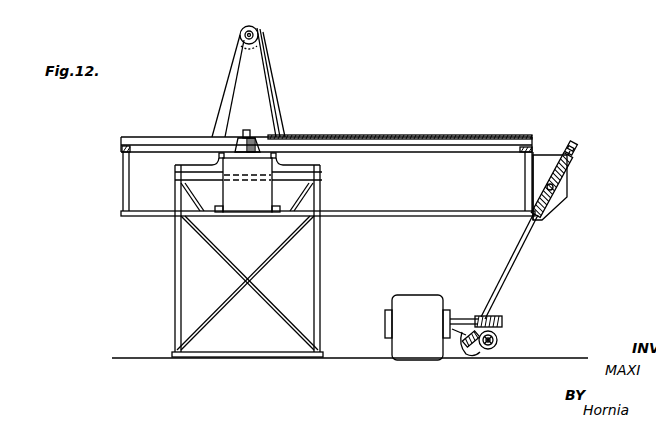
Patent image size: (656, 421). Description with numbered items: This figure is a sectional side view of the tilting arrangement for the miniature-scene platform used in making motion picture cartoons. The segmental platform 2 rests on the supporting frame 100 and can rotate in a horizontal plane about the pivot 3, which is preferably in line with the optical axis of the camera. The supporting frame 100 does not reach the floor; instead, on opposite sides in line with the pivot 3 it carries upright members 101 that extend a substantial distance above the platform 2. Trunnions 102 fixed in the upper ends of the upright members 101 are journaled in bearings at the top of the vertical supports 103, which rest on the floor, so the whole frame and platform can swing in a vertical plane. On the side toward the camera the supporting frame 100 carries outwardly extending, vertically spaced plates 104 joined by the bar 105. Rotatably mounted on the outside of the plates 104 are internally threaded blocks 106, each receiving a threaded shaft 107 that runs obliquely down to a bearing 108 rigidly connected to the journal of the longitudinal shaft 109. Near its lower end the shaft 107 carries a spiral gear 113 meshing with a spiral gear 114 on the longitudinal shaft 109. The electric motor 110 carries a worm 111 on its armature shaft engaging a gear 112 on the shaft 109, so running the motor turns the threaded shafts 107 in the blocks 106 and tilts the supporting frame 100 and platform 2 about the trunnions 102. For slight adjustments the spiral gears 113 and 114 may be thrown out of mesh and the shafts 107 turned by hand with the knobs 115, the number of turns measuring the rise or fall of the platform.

The platform 2 is at (441, 137).
The pivot 3 is at (250, 134).
The supporting frame 100 is at (467, 218).
The upright members 101 is at (262, 98).
The trunnions 102 is at (259, 31).
The vertical supports 103 is at (271, 67).
The plates 104 is at (545, 160).
The bar 105 is at (535, 153).
The internally threaded blocks 106 is at (560, 186).
The shaft 107 is at (527, 238).
The bearing 108 is at (477, 348).
The longitudinal shaft 109 is at (488, 350).
The electric motor 110 is at (425, 296).
The worm 111 is at (500, 321).
The gear 112 is at (499, 338).
The spiral gear 113 is at (460, 330).
The spiral gear 114 is at (496, 346).
The knobs 115 is at (577, 150).